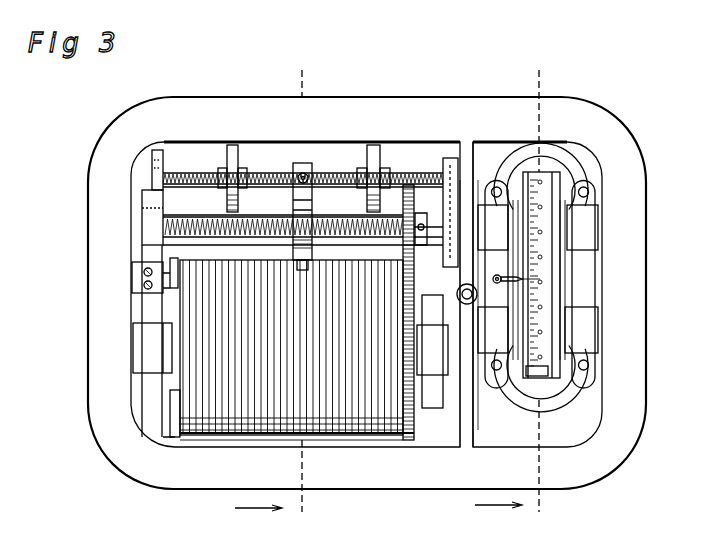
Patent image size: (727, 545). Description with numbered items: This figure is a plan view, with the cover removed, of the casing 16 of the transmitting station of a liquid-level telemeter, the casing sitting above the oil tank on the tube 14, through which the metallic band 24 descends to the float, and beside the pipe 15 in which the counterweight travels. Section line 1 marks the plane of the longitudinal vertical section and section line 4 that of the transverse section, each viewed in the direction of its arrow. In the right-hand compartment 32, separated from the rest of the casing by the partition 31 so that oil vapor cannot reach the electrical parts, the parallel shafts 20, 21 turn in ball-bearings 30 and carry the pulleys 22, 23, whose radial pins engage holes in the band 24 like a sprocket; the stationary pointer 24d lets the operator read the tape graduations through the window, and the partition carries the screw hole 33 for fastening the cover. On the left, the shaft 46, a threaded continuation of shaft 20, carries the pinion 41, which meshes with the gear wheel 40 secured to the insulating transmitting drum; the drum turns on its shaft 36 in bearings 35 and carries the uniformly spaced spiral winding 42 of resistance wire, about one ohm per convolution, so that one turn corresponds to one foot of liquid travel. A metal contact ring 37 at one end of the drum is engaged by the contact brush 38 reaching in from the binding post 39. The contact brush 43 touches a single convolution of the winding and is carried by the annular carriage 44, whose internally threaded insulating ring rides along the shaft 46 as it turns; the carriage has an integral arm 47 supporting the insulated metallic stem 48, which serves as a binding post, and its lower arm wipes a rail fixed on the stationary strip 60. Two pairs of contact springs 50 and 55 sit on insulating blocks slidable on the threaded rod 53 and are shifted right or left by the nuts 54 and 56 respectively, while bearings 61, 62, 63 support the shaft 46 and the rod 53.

The section line 1— 1 is at (509, 292).
The section line 4— 4 is at (270, 293).
The tube 14 is at (552, 152).
The pipe 15 is at (553, 405).
The casing 16 is at (274, 117).
The shaft 20 is at (563, 228).
The shaft 21 is at (560, 337).
The pulley 22 is at (558, 190).
The pulley 23 is at (568, 380).
The metallic band 24 is at (545, 278).
The stationary pointer 24d is at (542, 283).
The ball-bearings 30 is at (600, 223).
The partition 31 is at (473, 412).
The compartment 32 is at (499, 309).
The screw hole 33 is at (453, 313).
The bearings 35 is at (140, 360).
The shaft 36 is at (170, 343).
The contact ring 37 is at (172, 418).
The contact brush 38 is at (178, 272).
The binding post 39 is at (140, 280).
The gear wheel 40 is at (410, 443).
The pinion 41 is at (415, 258).
The spiral winding 42 is at (271, 438).
The contact brush 43 is at (290, 265).
The carriage 44 is at (296, 208).
The shaft 46 is at (340, 220).
The arm 47 is at (307, 168).
The metallic stem 48 is at (289, 170).
The contact springs 50 is at (226, 201).
The rod 53 is at (255, 172).
The nuts 54 is at (246, 188).
The contact springs 55 is at (380, 149).
The nuts 56 is at (389, 174).
The stationary strip 60 is at (178, 212).
The bearing 61 is at (152, 217).
The bearing 62 is at (449, 210).
The bearing 63 is at (160, 160).